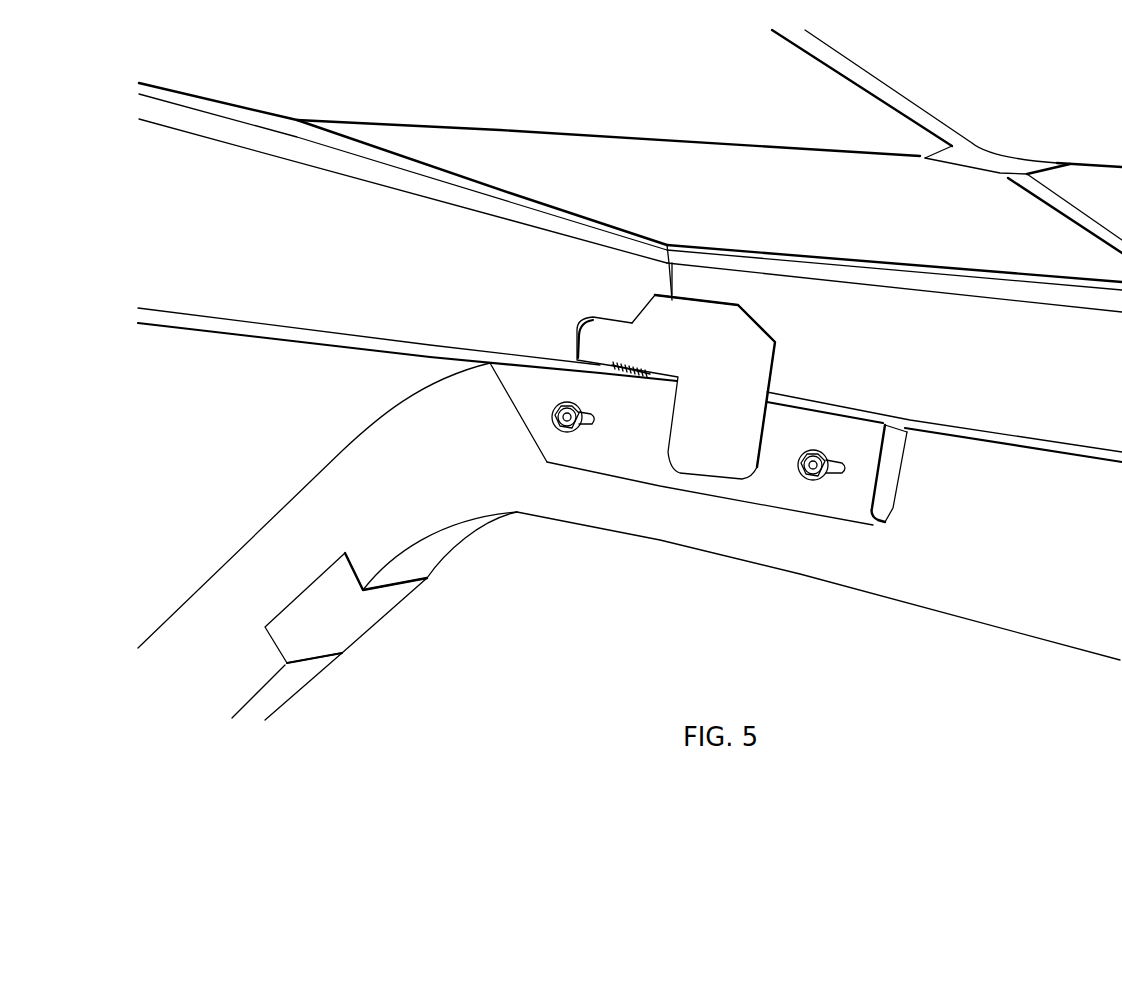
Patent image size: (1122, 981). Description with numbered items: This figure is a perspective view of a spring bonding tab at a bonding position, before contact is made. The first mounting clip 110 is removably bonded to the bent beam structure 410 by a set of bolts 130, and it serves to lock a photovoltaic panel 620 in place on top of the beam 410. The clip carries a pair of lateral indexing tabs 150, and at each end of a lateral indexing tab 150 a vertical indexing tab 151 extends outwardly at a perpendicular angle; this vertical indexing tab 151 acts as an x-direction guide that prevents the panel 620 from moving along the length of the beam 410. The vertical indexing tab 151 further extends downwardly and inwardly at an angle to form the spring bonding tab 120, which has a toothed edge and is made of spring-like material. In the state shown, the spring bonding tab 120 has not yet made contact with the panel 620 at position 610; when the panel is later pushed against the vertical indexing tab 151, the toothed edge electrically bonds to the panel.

The first mounting clip 110 is at (885, 522).
The spring bonding tab 120 is at (617, 368).
The bolts 130 is at (563, 432).
The lateral indexing tab 150 is at (653, 406).
The vertical indexing tab 151 is at (598, 325).
The bent beam structure 410 is at (987, 627).
The position 610 is at (699, 640).
The photovoltaic panel 620 is at (230, 333).